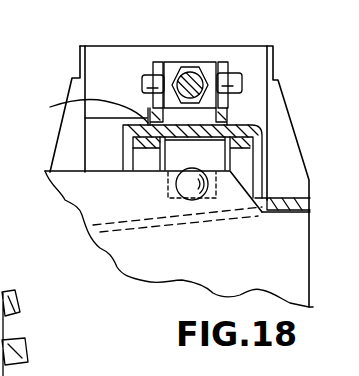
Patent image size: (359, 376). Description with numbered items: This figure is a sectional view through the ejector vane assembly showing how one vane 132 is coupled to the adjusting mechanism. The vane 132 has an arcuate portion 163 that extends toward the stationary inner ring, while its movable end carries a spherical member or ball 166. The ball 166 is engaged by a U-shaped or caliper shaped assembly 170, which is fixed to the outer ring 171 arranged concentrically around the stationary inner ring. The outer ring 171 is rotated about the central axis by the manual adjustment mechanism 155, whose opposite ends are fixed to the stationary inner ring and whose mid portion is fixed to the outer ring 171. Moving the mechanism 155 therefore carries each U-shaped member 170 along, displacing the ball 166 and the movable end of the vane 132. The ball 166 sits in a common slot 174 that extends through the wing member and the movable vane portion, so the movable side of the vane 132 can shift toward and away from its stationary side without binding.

The manual adjustment mechanism 155 is at (231, 50).
The U-shaped assembly 170 is at (196, 154).
The outer ring 171 is at (150, 126).
The arcuate portion 163 is at (138, 150).
The spherical member 166 is at (180, 182).
The common slot 174 is at (216, 198).
The vane 132 is at (182, 283).